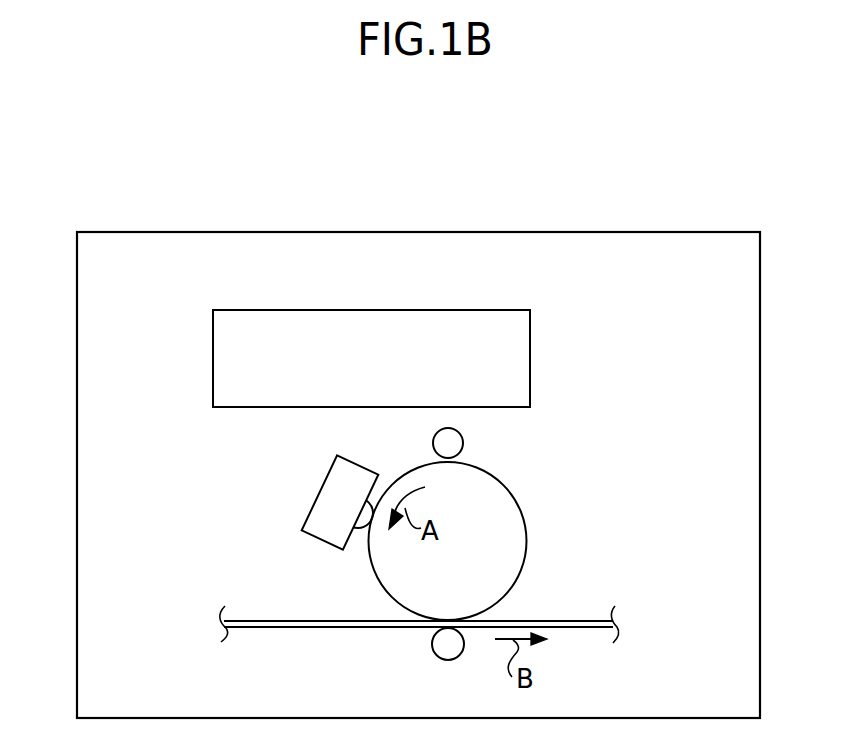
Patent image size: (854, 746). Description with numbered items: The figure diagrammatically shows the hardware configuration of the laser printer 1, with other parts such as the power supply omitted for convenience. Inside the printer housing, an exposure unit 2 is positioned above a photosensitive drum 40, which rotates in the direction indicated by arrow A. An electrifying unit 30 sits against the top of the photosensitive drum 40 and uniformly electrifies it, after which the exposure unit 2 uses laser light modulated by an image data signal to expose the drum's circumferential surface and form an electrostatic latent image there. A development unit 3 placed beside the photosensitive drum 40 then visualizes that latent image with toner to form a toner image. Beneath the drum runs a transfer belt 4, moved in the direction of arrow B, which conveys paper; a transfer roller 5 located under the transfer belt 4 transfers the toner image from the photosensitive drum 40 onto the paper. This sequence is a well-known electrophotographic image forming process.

The laser printer 1 is at (702, 232).
The exposure unit 2 is at (474, 309).
The development unit 3 is at (321, 492).
The transfer belt 4 is at (267, 628).
The transfer roller 5 is at (432, 649).
The electrifying unit 30 is at (463, 441).
The photosensitive drum 40 is at (373, 571).